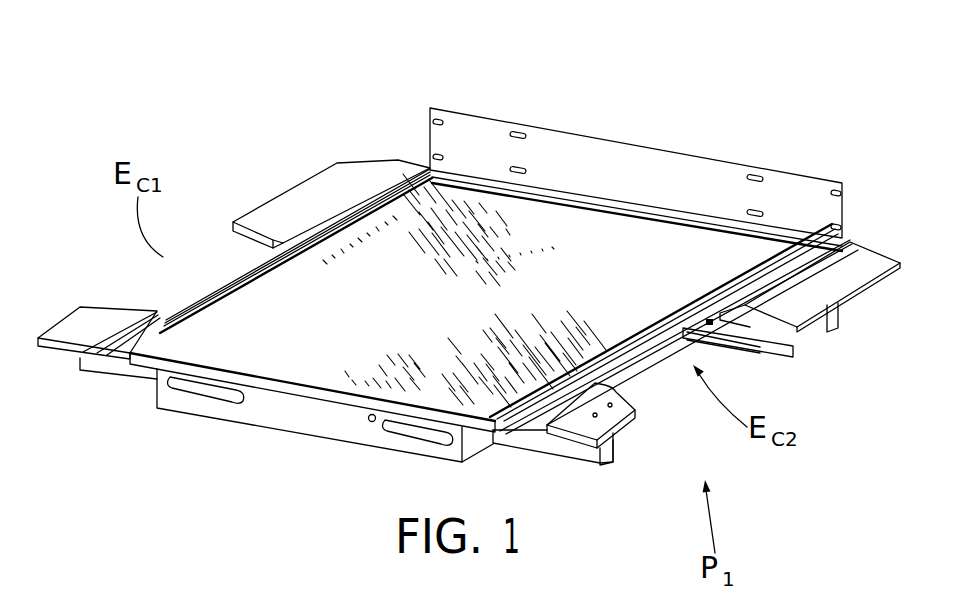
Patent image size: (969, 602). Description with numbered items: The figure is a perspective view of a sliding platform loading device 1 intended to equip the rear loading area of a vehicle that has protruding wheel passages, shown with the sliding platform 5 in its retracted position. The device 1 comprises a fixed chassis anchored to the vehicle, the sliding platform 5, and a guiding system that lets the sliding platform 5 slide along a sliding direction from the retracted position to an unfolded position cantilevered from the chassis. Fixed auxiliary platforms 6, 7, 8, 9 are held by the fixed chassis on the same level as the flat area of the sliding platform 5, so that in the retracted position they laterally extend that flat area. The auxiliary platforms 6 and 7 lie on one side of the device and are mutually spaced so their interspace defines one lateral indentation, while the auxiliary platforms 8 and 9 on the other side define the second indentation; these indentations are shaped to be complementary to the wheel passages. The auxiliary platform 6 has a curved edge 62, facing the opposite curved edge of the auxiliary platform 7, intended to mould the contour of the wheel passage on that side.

The sliding platform loading device 1 is at (92, 67).
The sliding platform 5 is at (626, 141).
The auxiliary platform 6 is at (74, 322).
The curved edge 62 is at (104, 313).
The auxiliary platform 7 is at (323, 178).
The auxiliary platform 8 is at (617, 428).
The auxiliary platform 9 is at (815, 315).